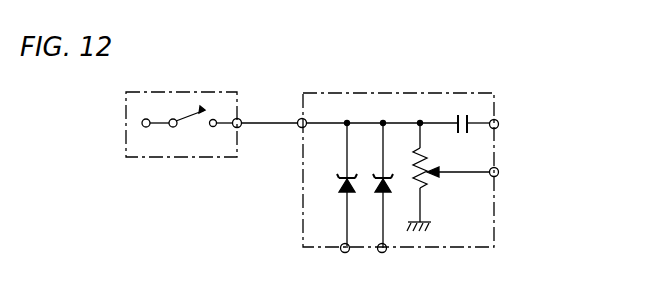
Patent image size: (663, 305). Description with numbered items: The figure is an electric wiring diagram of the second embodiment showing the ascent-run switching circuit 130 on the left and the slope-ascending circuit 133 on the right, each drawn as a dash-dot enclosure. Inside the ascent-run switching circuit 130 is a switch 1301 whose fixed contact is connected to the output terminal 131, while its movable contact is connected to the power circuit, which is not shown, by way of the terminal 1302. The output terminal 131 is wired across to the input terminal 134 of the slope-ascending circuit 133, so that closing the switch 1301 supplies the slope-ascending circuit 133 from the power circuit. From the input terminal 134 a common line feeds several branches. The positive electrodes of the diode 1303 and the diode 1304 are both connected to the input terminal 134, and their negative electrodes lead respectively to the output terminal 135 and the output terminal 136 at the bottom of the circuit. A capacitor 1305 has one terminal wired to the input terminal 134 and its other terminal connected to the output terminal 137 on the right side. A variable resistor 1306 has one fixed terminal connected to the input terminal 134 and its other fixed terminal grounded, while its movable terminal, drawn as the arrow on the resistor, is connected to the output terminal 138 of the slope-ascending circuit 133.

The ascent-run switching circuit 130 is at (163, 124).
The switch 1301 is at (172, 127).
The terminal 1302 is at (144, 127).
The output terminal 131 is at (237, 118).
The input terminal 134 is at (300, 118).
The slope-ascending circuit 133 is at (393, 170).
The capacitor 1305 is at (459, 116).
The output terminal 137 is at (498, 121).
The output terminal 138 is at (498, 169).
The diode 1304 is at (340, 181).
The diode 1303 is at (378, 190).
The variable resistor 1306 is at (422, 188).
The output terminal 136 is at (341, 251).
The output terminal 135 is at (384, 252).